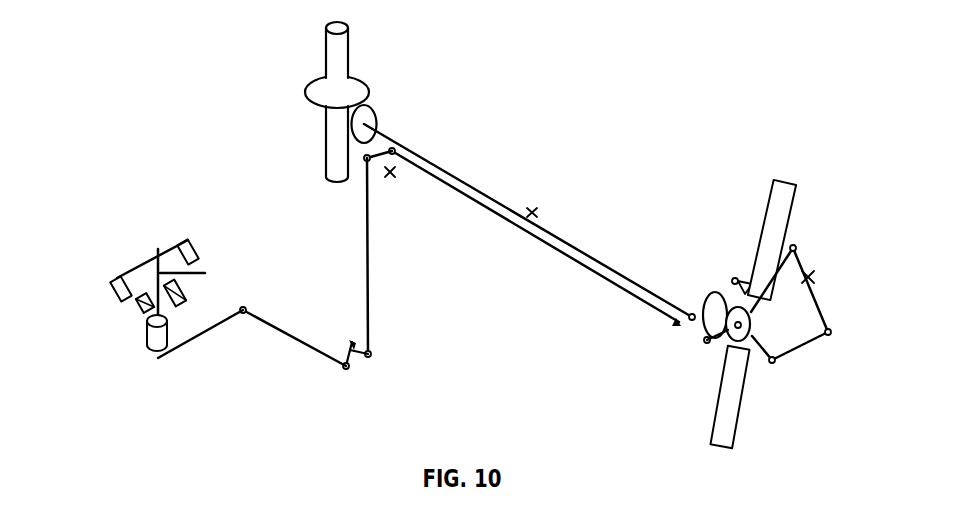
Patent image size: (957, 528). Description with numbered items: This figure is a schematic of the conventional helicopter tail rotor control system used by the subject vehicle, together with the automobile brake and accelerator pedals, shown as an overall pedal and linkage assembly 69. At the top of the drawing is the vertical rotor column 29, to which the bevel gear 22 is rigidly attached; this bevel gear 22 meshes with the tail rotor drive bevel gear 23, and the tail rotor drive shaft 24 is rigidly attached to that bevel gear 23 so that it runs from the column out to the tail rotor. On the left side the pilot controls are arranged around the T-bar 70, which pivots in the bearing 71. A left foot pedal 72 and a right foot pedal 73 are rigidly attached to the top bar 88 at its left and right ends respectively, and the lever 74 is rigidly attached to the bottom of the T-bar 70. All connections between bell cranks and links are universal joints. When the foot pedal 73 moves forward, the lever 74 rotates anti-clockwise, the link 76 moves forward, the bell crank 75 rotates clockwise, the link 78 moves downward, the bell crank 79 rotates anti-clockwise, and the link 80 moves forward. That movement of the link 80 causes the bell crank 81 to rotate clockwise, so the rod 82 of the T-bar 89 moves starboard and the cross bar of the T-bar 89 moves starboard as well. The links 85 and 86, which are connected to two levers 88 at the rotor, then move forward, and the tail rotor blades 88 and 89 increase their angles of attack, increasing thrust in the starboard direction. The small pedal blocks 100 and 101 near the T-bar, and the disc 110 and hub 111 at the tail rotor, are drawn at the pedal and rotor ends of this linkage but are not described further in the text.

The bevel gear 22 is at (305, 103).
The tail rotor drive bevel gear 23 is at (379, 118).
The tail rotor drive shaft 24 is at (543, 217).
The vertical rotor column 29 is at (352, 57).
The linkage assembly 69 is at (110, 227).
The T-bar 70 is at (205, 273).
The bearing 71 is at (147, 343).
The left foot pedal 72 is at (112, 288).
The right foot pedal 73 is at (192, 243).
The lever 74 is at (217, 330).
The bell crank 75 is at (355, 357).
The link 76 is at (280, 332).
The link 78 is at (370, 265).
The bell crank 79 is at (392, 151).
The link 80 is at (524, 229).
The bell crank 81 is at (692, 330).
The rod 82 is at (806, 276).
The link 85 is at (797, 350).
The link 86 is at (747, 273).
The top bar 88 is at (162, 250).
The tail rotor blade 89 is at (820, 303).
The block 100 is at (138, 303).
The block 101 is at (186, 289).
The disc 110 is at (703, 307).
The hub 111 is at (730, 305).